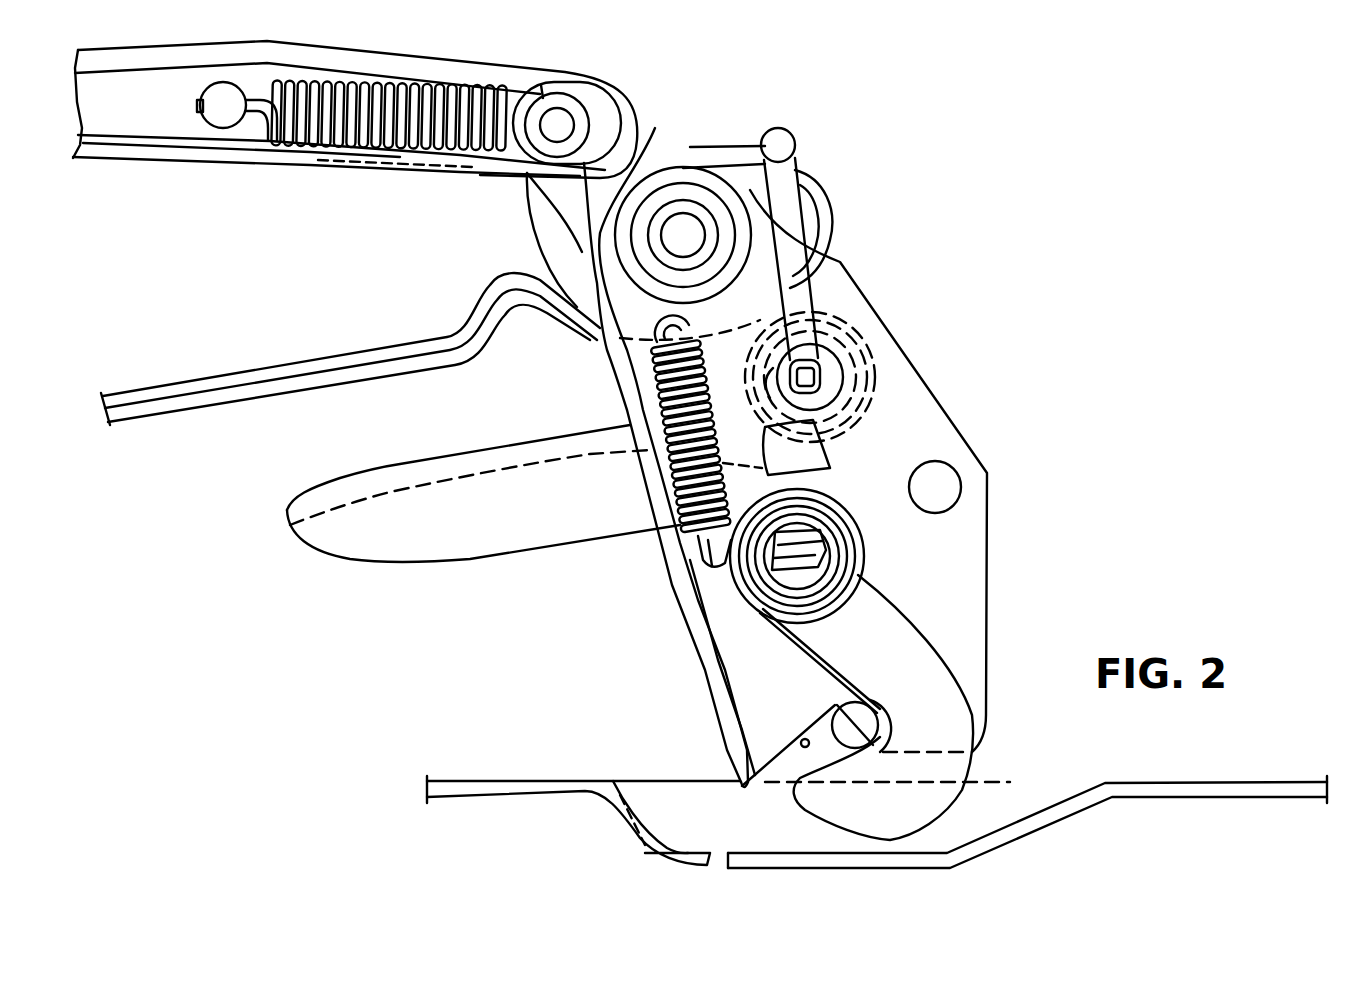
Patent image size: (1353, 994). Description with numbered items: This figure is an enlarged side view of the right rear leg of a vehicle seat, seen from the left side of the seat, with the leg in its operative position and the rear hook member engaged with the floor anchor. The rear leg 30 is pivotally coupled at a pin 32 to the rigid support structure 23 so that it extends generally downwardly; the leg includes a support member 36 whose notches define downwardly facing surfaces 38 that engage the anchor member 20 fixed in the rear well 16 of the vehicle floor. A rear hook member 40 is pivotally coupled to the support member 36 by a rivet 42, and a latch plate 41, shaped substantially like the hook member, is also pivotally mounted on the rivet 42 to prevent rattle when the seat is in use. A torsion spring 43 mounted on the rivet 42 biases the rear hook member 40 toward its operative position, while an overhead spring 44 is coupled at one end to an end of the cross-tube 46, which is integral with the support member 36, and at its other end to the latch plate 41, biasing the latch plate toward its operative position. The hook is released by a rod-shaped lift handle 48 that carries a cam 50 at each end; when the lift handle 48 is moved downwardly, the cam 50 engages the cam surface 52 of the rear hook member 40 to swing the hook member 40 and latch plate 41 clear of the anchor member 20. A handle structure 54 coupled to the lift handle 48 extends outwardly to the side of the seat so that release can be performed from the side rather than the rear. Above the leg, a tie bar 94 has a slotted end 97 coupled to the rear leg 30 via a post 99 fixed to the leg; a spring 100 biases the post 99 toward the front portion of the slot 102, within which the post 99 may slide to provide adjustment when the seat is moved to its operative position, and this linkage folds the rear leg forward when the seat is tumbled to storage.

The rear well 16 is at (1032, 810).
The anchor member 20 is at (852, 705).
The rigid support structure 23 is at (317, 248).
The rear leg 30 is at (938, 399).
The pin 32 is at (697, 233).
The support member 36 is at (965, 538).
The downwardly facing surface 38 is at (802, 740).
The rear hook member 40 is at (827, 673).
The latch plate 41 is at (937, 720).
The rivet 42 is at (817, 555).
The torsion spring 43 is at (840, 597).
The overhead spring 44 is at (640, 383).
The cross-tube 46 is at (800, 272).
The lift handle 48 is at (790, 200).
The cam 50 is at (840, 370).
The cam surface 52 is at (835, 455).
The handle structure 54 is at (600, 538).
The tie bar 94 is at (180, 128).
The slotted end 97 is at (623, 107).
The post 99 is at (557, 123).
The spring 100 is at (343, 117).
The slot 102 is at (537, 93).